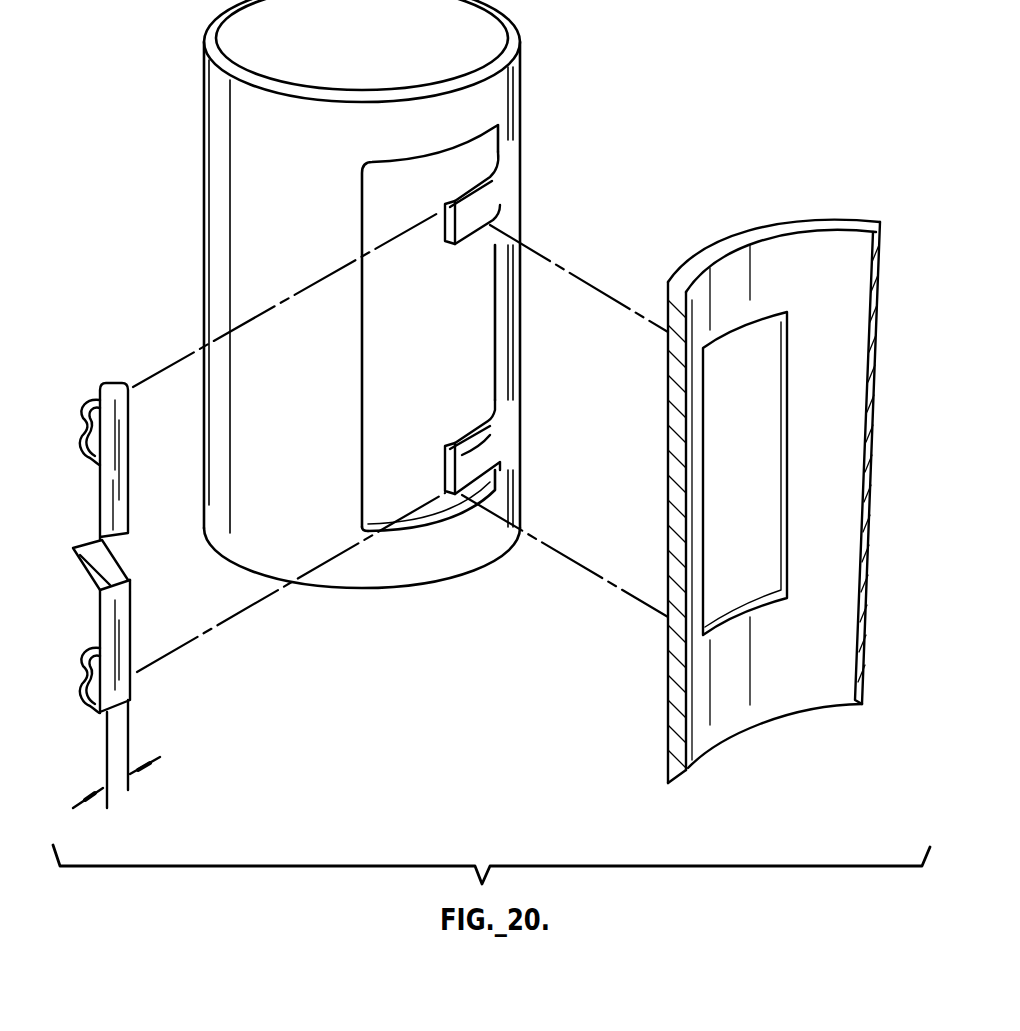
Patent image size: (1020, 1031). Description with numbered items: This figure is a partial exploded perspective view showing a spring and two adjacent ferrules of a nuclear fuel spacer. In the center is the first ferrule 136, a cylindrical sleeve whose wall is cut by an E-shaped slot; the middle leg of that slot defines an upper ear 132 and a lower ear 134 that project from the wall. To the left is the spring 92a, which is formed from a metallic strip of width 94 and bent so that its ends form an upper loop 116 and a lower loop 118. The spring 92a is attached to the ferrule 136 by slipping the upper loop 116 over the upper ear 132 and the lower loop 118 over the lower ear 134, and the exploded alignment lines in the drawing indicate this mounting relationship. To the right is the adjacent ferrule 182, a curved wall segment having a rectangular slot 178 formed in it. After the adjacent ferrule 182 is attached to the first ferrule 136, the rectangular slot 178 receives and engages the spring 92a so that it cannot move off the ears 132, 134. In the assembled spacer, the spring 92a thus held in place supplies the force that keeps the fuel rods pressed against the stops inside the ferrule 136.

The ferrule 136 is at (523, 63).
The upper ear 132 is at (473, 212).
The lower ear 134 is at (465, 458).
The adjacent ferrule 182 is at (872, 541).
The rectangular slot 178 is at (785, 436).
The spring 92a is at (122, 598).
The upper loop 116 is at (95, 452).
The lower loop 118 is at (93, 712).
The width 94 is at (118, 795).